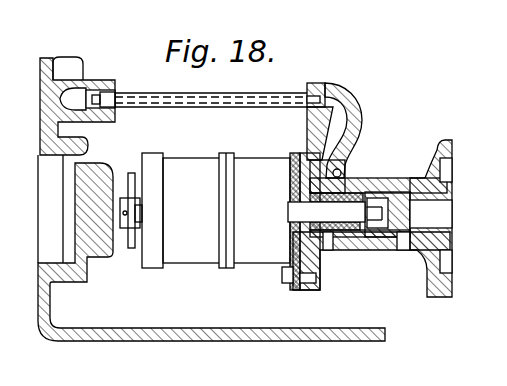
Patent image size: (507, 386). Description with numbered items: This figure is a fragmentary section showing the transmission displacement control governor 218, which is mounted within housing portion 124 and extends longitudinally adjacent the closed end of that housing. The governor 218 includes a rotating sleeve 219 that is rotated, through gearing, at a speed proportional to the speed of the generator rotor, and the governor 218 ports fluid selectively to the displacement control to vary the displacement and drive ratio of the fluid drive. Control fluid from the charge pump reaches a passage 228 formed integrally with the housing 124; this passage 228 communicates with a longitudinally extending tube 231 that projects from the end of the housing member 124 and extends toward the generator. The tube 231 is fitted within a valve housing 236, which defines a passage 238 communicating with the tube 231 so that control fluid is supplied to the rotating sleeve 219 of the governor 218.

The housing portion 124 is at (44, 84).
The passage 228 is at (78, 99).
The tube 231 is at (284, 95).
The valve housing 236 is at (331, 105).
The passage 238 is at (343, 114).
The rotating sleeve 219 is at (354, 212).
The governor 218 is at (243, 268).